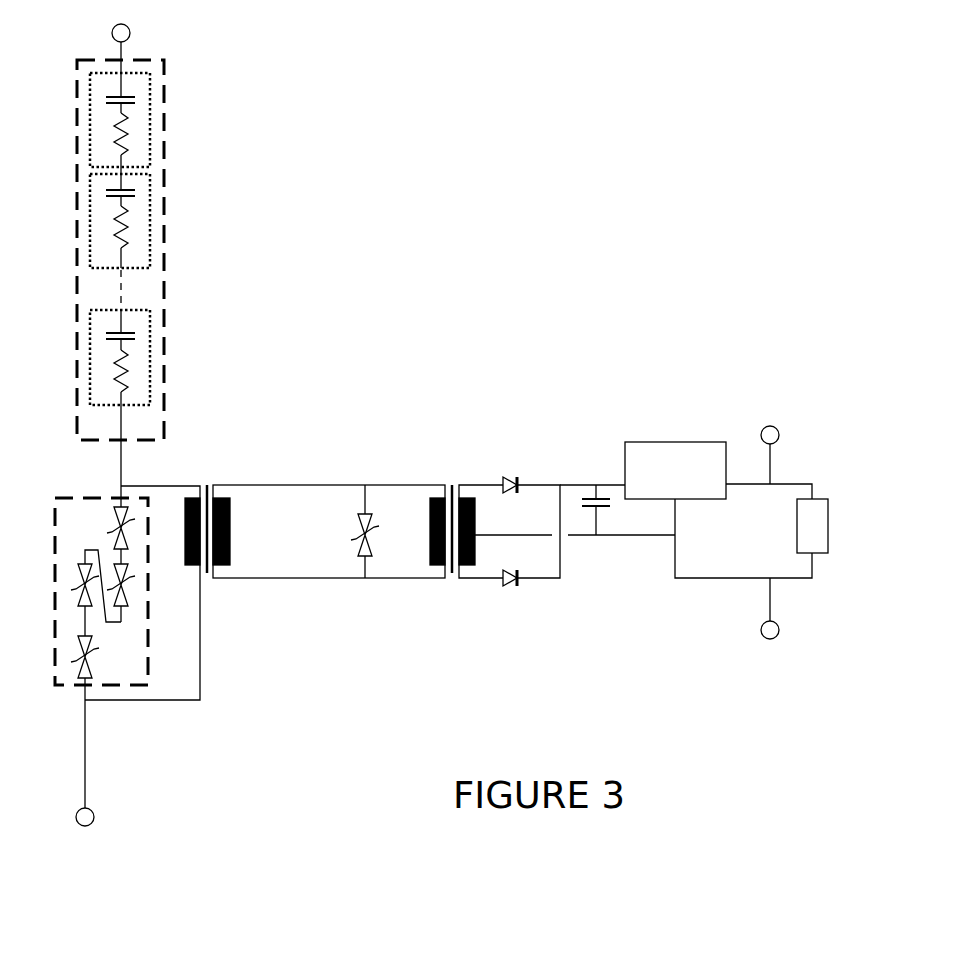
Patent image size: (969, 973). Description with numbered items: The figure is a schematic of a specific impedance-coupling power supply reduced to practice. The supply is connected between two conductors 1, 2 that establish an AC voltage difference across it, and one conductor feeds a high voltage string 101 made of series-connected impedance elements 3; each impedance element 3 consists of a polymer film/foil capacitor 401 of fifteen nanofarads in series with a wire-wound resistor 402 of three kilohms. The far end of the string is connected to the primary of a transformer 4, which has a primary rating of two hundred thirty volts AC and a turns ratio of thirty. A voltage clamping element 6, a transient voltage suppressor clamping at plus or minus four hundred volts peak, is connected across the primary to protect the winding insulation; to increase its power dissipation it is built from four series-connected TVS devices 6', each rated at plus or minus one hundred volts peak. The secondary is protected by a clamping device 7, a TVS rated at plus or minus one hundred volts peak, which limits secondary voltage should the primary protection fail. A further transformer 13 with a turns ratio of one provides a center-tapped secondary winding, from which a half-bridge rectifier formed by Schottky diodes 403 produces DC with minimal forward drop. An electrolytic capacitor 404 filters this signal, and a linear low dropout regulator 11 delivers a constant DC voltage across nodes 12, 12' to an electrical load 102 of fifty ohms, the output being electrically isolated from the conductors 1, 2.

The conductor 1 is at (133, 51).
The conductor 2 is at (102, 822).
The impedance element 3 is at (171, 130).
The transformer 4 is at (206, 478).
The voltage clamping element 6 is at (78, 591).
The TVS device 6' is at (53, 610).
The clamping device 7 is at (358, 520).
The regulator 11 is at (675, 470).
The node 12 is at (771, 439).
The node 12' is at (776, 625).
The transformer 13 is at (440, 483).
The high voltage string 101 is at (189, 283).
The electrical load 102 is at (813, 535).
The polymer film/foil capacitor 401 is at (128, 102).
The wire-wound resistor 402 is at (128, 132).
The Schottky diodes 403 is at (560, 552).
The electrolytic capacitor 404 is at (590, 492).